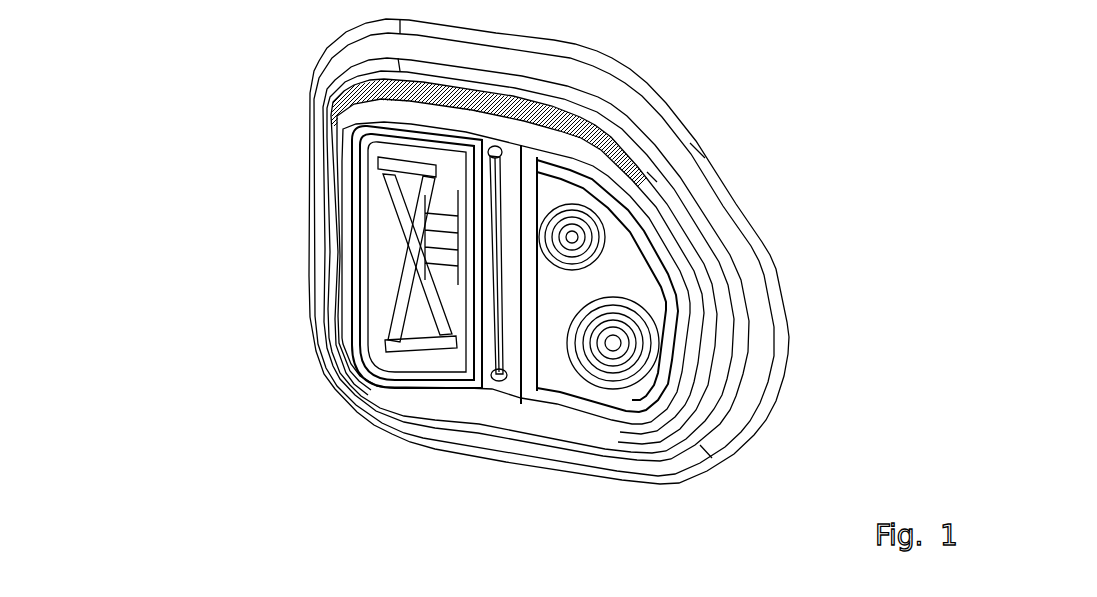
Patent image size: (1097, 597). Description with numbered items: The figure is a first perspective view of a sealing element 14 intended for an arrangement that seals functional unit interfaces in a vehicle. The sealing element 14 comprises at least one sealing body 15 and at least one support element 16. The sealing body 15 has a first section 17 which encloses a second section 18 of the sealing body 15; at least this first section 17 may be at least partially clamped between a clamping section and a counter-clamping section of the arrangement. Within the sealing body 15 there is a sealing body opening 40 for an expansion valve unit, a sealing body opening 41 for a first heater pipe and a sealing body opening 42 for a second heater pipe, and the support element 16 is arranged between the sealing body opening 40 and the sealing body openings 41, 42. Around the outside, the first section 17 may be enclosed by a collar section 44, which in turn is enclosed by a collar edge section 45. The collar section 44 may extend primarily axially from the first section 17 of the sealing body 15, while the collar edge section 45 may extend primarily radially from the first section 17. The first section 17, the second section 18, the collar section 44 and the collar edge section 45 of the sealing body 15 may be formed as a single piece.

The sealing element 14 is at (153, 72).
The sealing body 15 is at (113, 125).
The support element 16 is at (487, 250).
The first section 17 is at (393, 113).
The second section 18 is at (480, 203).
The sealing body opening 40 is at (397, 283).
The sealing body opening 41 is at (572, 233).
The sealing body opening 42 is at (613, 345).
The collar section 44 is at (490, 92).
The collar edge section 45 is at (485, 57).